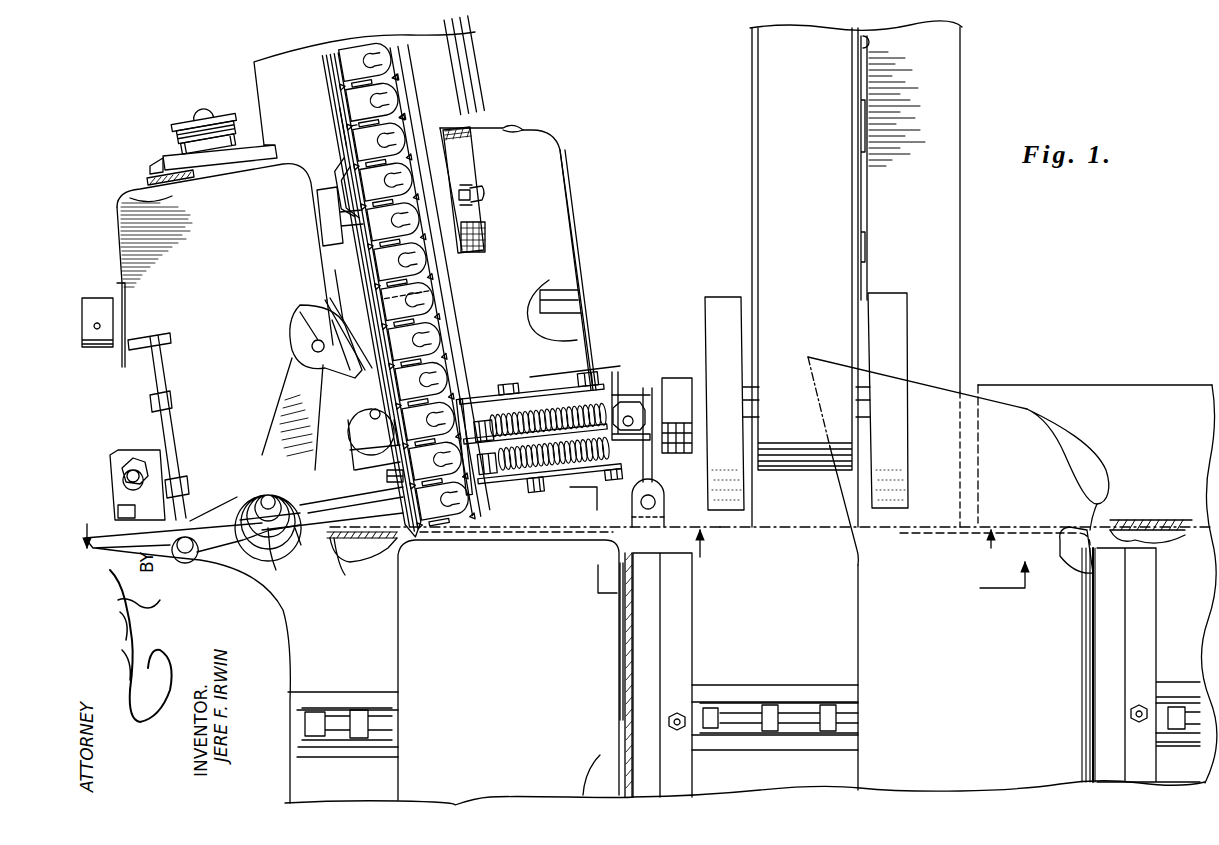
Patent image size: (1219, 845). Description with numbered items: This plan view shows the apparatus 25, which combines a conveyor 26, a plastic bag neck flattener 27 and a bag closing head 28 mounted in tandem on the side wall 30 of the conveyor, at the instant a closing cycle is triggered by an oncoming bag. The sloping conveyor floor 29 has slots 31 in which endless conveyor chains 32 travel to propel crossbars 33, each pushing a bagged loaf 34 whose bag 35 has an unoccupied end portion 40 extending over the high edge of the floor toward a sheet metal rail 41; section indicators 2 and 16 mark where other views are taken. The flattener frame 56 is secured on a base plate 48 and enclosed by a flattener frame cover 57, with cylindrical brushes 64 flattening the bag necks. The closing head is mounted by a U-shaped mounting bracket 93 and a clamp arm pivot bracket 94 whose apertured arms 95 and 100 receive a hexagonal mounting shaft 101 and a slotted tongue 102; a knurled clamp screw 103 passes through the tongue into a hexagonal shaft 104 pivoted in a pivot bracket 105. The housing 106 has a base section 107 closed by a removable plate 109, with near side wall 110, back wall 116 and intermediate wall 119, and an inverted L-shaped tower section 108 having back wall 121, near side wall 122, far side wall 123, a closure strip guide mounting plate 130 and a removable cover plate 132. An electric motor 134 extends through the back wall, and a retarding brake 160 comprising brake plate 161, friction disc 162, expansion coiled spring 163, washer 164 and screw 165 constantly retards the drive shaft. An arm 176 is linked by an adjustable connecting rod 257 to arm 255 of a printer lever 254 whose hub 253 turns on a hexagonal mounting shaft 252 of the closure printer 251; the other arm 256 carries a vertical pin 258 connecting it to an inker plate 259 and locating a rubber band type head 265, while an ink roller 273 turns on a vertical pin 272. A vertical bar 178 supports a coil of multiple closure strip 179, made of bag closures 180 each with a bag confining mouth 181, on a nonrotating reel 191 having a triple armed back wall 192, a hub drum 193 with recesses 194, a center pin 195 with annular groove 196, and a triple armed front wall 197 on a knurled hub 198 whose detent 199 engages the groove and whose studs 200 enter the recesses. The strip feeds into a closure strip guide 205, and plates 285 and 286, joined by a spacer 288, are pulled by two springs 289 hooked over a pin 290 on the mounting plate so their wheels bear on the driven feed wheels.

The section line 2 is at (556, 541).
The section line 16 is at (850, 558).
The apparatus 25 is at (1036, 275).
The conveyor 26 is at (1146, 393).
The plastic bag neck flattener 27 is at (945, 128).
The bag closing head 28 is at (598, 246).
The conveyor floor 29 is at (745, 685).
The side wall 30 is at (1156, 522).
The slots 31 is at (705, 688).
The endless conveyor chains 32 is at (745, 702).
The crossbars 33 is at (1118, 632).
The bagged loaf 34 is at (1075, 557).
The bag 35 is at (1095, 545).
The unoccupied end portion 40 is at (968, 395).
The sheet metal rail 41 is at (1052, 385).
The column 48 is at (958, 223).
The flattener frame 56 is at (862, 194).
The flattener frame cover 57 is at (795, 168).
The brushes 64 is at (738, 297).
The mounting bracket 93 is at (100, 530).
The clamp arm pivot bracket 94 is at (664, 520).
The apertured arms 95 is at (110, 478).
The apertured arms 100 is at (660, 497).
The vertical mounting shaft 101 is at (121, 455).
The horizontally slotted tongue 102 is at (652, 473).
The clamp screw 103 is at (655, 378).
The vertical hexagonal shaft 104 is at (622, 402).
The pivot bracket 105 is at (612, 395).
The housing 106 is at (568, 198).
The base section 107 is at (556, 145).
The tower section 108 is at (121, 197).
The removable plate 109 is at (301, 521).
The near side wall 110 is at (582, 293).
The back wall 116 is at (508, 124).
The intermediate wall 119 is at (540, 308).
The back wall 121 is at (176, 186).
The near side wall 122 is at (322, 278).
The far side wall 123 is at (112, 262).
The closure strip guide mounting plate 130 is at (392, 500).
The removable cover plate 132 is at (192, 399).
The electric motor 134 is at (270, 71).
The retarding brake 160 is at (178, 128).
The brake plate 161 is at (236, 163).
The disc 162 is at (163, 165).
The expansion coiled spring 163 is at (250, 110).
The washer 164 is at (186, 130).
The screw 165 is at (205, 118).
The arm 176 is at (121, 313).
The bar 178 is at (322, 218).
The multiple closure strip 179 is at (358, 132).
The bag closures 180 is at (347, 293).
The bag confining aperture 181 is at (372, 98).
The nonrotating reel 191 is at (404, 97).
The back wall 192 is at (340, 150).
The hub drum 193 is at (412, 313).
The recesses 194 is at (404, 146).
The center pin 195 is at (440, 186).
The annular groove 196 is at (470, 186).
The front wall 197 is at (450, 352).
The hub 198 is at (488, 224).
The detent 199 is at (482, 200).
The short studs 200 is at (355, 182).
The closure strip guide 205 is at (390, 484).
The closure printer 251 is at (288, 362).
The hexagonal mounting shaft 252 is at (268, 495).
The hub 253 is at (288, 555).
The printer lever 254 is at (295, 541).
The arm 255 is at (215, 538).
The arm 256 is at (284, 412).
The adjustable connecting rod 257 is at (172, 446).
The vertical pin 258 is at (318, 334).
The inker plate 259 is at (348, 330).
The type head 265 is at (292, 330).
The vertical pin 272 is at (352, 438).
The ink roller 273 is at (355, 460).
The plate 285 is at (470, 400).
The plate 286 is at (491, 478).
The spacer 288 is at (632, 411).
The springs 289 is at (545, 395).
The pin 290 is at (488, 418).